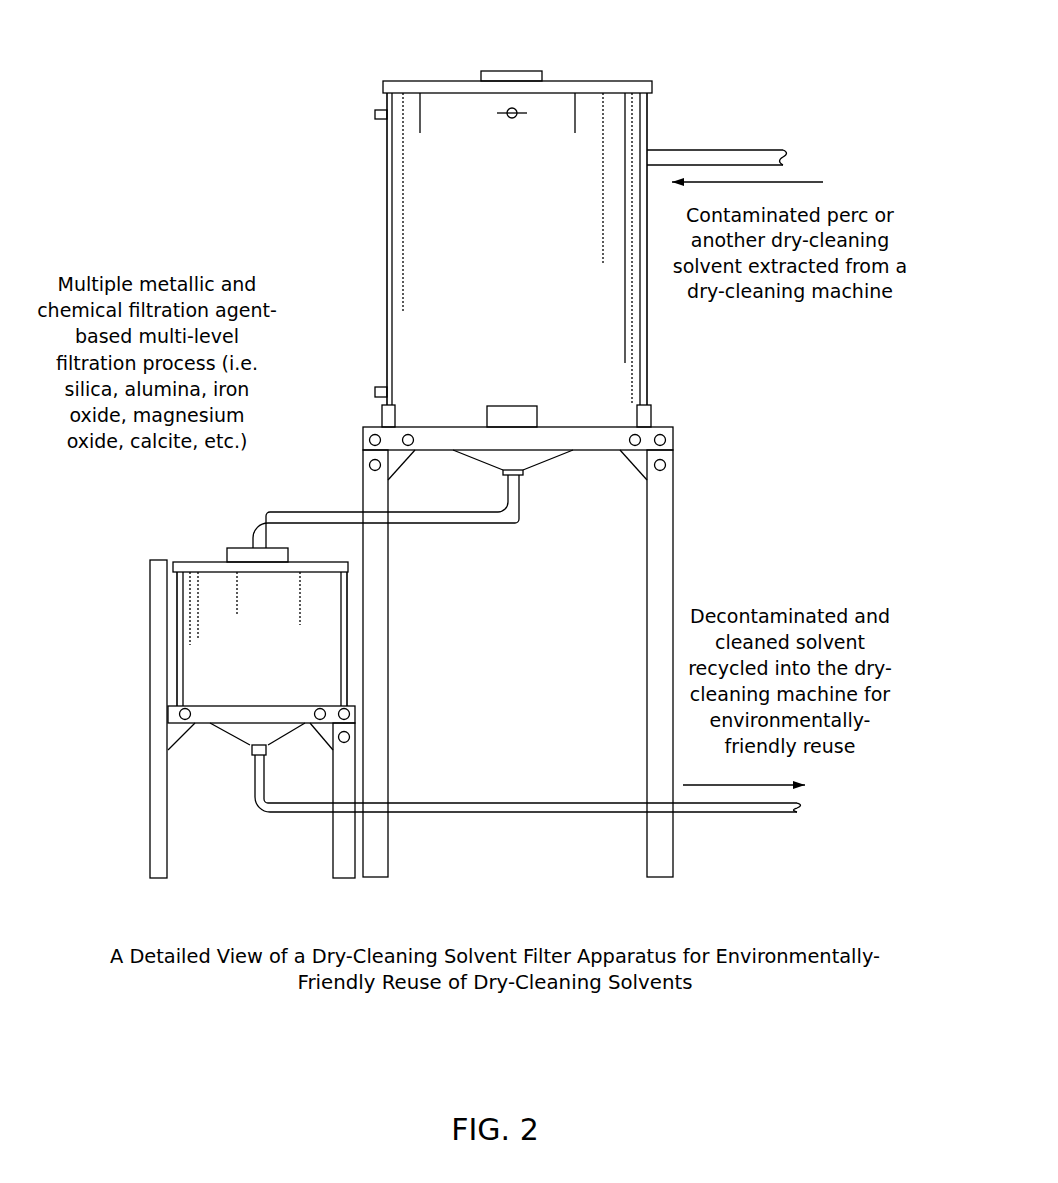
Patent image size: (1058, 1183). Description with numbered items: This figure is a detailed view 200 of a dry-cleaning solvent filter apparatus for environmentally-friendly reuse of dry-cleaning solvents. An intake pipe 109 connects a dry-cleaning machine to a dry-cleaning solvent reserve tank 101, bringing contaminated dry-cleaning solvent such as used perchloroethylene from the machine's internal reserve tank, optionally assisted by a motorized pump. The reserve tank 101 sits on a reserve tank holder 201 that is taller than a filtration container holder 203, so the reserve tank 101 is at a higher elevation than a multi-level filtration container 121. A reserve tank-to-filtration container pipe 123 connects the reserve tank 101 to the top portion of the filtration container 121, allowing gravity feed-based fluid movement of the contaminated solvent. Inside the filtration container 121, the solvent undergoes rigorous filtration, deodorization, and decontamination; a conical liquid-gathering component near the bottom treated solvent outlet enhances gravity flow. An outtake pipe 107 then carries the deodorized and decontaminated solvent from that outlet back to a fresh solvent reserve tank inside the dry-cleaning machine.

The detailed view 200 is at (462, 1076).
The dry-cleaning solvent reserve tank 101 is at (513, 249).
The intake pipe 109 is at (729, 143).
The reserve tank holder 201 is at (683, 532).
The reserve tank-to-filtration container pipe 123 is at (325, 505).
The multi-level filtration container 121 is at (187, 460).
The filtration container holder 203 is at (143, 785).
The outtake pipe 107 is at (487, 792).